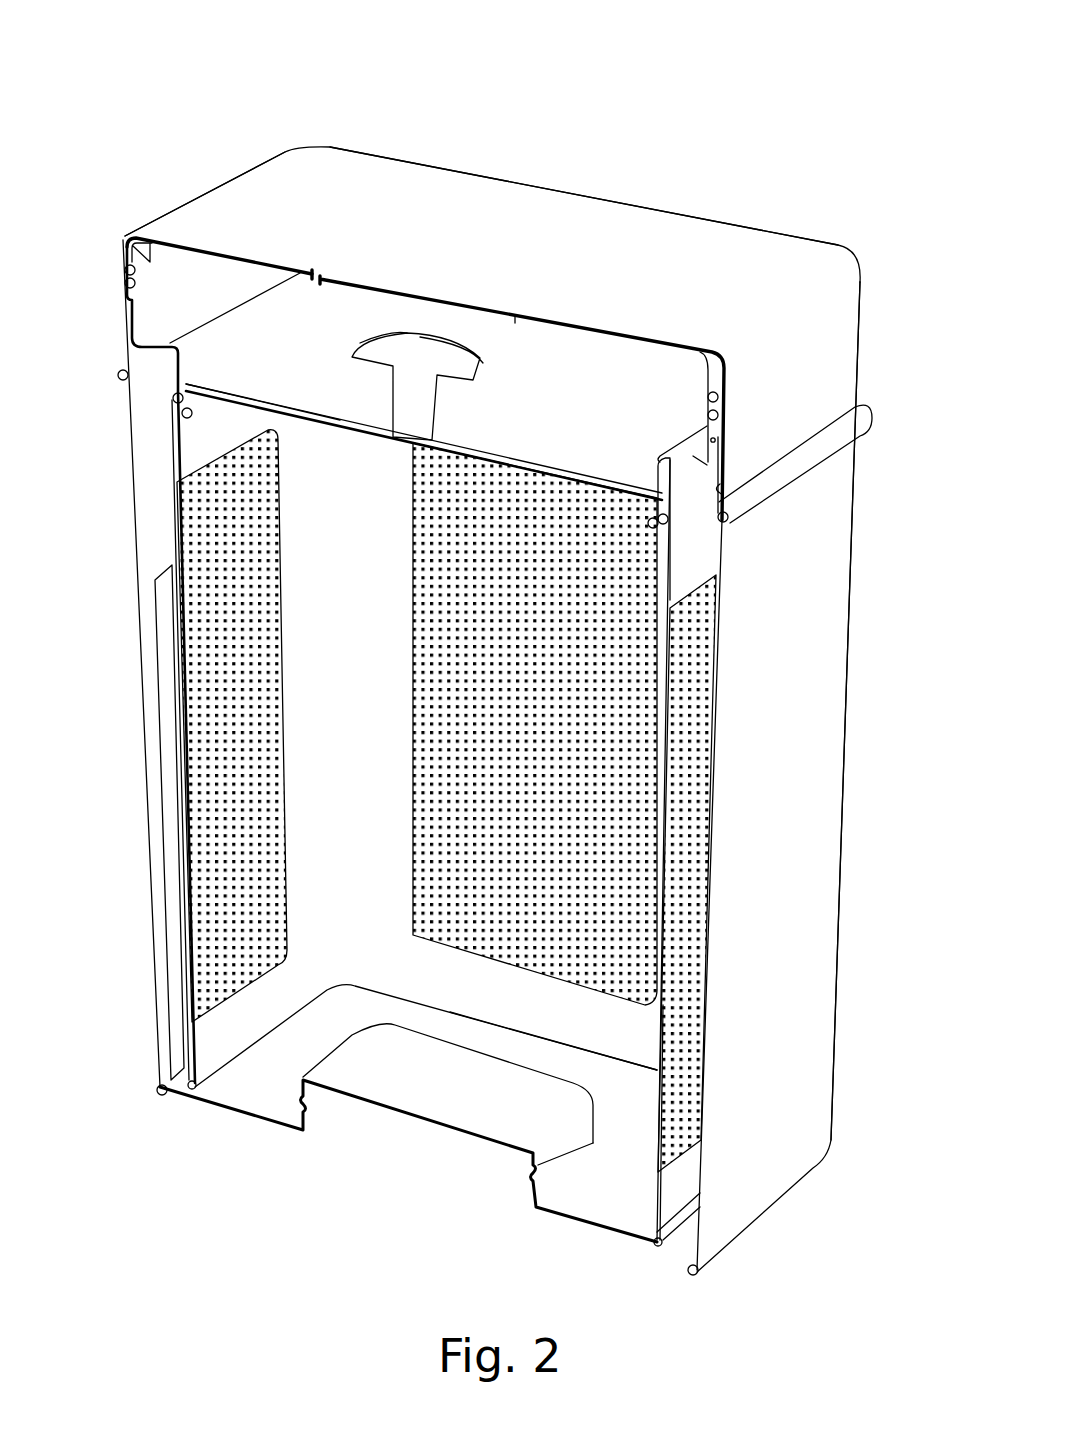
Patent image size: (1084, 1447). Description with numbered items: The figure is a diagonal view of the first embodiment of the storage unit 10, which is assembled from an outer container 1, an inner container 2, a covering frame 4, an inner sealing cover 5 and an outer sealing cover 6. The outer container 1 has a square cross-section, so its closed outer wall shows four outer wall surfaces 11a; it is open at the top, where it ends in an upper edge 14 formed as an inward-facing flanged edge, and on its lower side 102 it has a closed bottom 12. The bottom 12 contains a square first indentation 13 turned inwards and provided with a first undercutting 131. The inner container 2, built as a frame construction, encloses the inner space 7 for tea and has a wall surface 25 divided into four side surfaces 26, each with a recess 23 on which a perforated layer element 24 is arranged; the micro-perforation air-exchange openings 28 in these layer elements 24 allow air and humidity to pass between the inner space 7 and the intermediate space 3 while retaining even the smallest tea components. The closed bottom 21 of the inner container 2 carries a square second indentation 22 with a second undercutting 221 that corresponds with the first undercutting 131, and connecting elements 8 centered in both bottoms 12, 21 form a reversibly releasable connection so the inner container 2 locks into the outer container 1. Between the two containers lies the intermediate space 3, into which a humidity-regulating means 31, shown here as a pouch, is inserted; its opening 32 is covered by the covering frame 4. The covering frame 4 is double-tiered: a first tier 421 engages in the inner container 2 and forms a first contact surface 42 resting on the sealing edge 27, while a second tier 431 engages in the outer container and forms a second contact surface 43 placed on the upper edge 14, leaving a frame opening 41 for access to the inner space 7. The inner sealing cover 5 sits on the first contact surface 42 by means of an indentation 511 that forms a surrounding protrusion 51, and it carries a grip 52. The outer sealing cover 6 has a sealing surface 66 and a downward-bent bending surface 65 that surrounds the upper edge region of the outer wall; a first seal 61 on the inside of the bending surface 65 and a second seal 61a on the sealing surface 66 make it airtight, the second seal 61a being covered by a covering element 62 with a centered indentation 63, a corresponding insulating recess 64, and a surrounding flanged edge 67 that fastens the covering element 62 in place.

The outer container 1 is at (858, 978).
The storage unit 10 is at (356, 76).
The outer wall surface 11a is at (160, 907).
The bottom 12 is at (683, 1243).
The first indentation 13 is at (401, 1112).
The first undercutting 131 is at (571, 1143).
The upper edge 14 is at (723, 413).
The inner container 2 is at (152, 421).
The bottom 21 is at (604, 1198).
The second indentation 22 is at (551, 1110).
The second undercutting 221 is at (563, 1160).
The recess 23 is at (226, 463).
The layer element 24 is at (679, 903).
The wall surface 25 is at (356, 751).
The side surface 26 is at (268, 1025).
The sealing edge 27 is at (120, 373).
The air-exchange opening 28 is at (700, 849).
The intermediate space 3 is at (667, 784).
The humidity-regulating means 31 is at (192, 1058).
The opening 32 is at (152, 392).
The covering frame 4 is at (194, 305).
The frame opening 41 is at (337, 437).
The first contact surface 42 is at (695, 456).
The first tier 421 is at (671, 481).
The second contact surface 43 is at (725, 393).
The second tier 431 is at (718, 441).
The inner sealing cover 5 is at (305, 350).
The protrusion 51 is at (681, 447).
The indentation 511 is at (656, 479).
The grip 52 is at (415, 362).
The outer sealing cover 6 is at (305, 212).
The first seal 61 is at (123, 247).
The second seal 61a is at (148, 252).
The covering element 62 is at (156, 243).
The indentation 63 is at (411, 343).
The insulating recess 64 is at (313, 270).
The bending surface 65 is at (781, 358).
The sealing surface 66 is at (586, 262).
The flanged edge 67 is at (709, 380).
The inner space 7 is at (366, 831).
The connecting element 8 is at (471, 1097).
The lower side 102 is at (290, 1228).